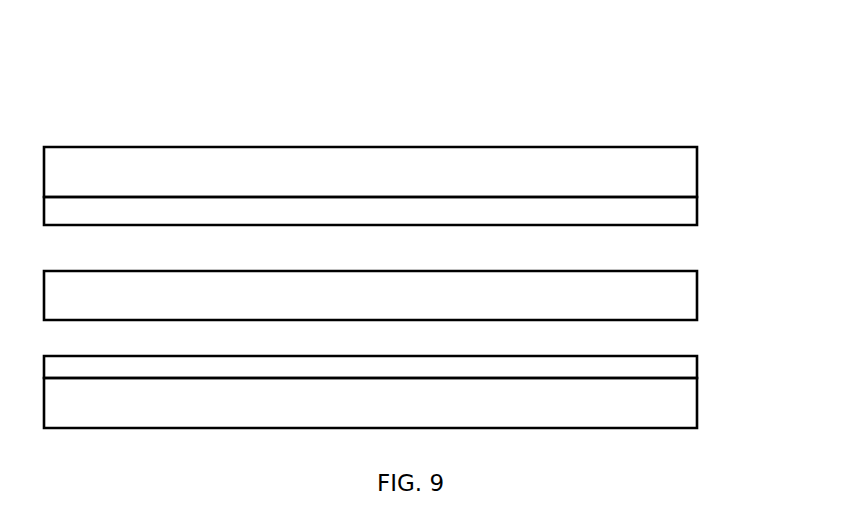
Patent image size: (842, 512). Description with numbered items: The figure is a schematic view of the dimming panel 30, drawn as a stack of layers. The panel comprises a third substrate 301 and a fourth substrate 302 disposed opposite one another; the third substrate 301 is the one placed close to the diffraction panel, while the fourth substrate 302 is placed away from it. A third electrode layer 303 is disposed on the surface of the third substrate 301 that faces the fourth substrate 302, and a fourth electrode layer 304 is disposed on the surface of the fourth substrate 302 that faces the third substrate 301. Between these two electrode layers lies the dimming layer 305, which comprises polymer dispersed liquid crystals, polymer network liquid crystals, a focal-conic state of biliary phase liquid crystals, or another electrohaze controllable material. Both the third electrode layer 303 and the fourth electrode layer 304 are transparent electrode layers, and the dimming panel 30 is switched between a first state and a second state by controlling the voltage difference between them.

The dimming panel 30 is at (363, 97).
The third substrate 301 is at (683, 406).
The fourth substrate 302 is at (683, 177).
The third electrode layer 303 is at (683, 369).
The fourth electrode layer 304 is at (683, 222).
The dimming layer 305 is at (683, 296).